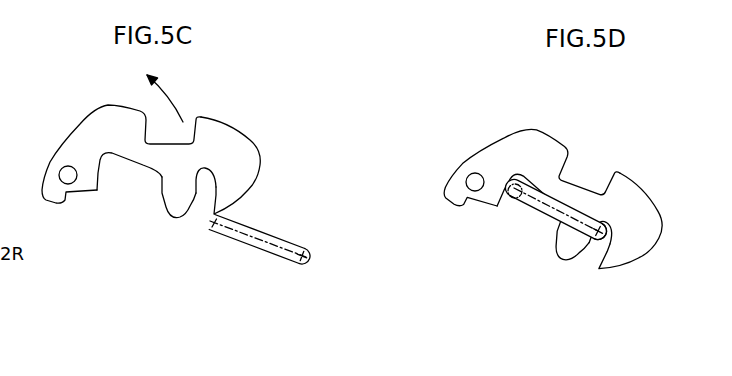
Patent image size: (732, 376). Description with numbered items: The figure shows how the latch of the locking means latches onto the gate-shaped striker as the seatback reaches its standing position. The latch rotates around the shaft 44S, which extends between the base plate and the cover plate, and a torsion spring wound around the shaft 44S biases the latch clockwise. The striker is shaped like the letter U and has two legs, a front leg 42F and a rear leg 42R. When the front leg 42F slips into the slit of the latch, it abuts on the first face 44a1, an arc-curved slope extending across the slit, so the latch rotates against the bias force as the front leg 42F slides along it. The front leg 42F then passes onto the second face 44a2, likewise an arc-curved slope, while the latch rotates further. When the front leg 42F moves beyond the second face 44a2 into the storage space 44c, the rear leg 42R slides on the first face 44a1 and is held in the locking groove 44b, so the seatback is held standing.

In FIG. 5C, the shaft 44S is at (67, 165).
In FIG. 5C, the storage space 44c is at (107, 167).
In FIG. 5D, the storage space 44c is at (516, 177).
In FIG. 5C, the locking groove 44b is at (208, 176).
In FIG. 5D, the locking groove 44b is at (603, 222).
In FIG. 5C, the first face 44a1 is at (216, 212).
In FIG. 5D, the first face 44a1 is at (612, 266).
In FIG. 5C, the second face 44a2 is at (183, 222).
In FIG. 5D, the second face 44a2 is at (560, 262).
In FIG. 5C, the front leg 42F is at (213, 224).
In FIG. 5D, the front leg 42F is at (509, 201).
In FIG. 5C, the rear leg 42R is at (303, 258).
In FIG. 5D, the rear leg 42R is at (598, 235).